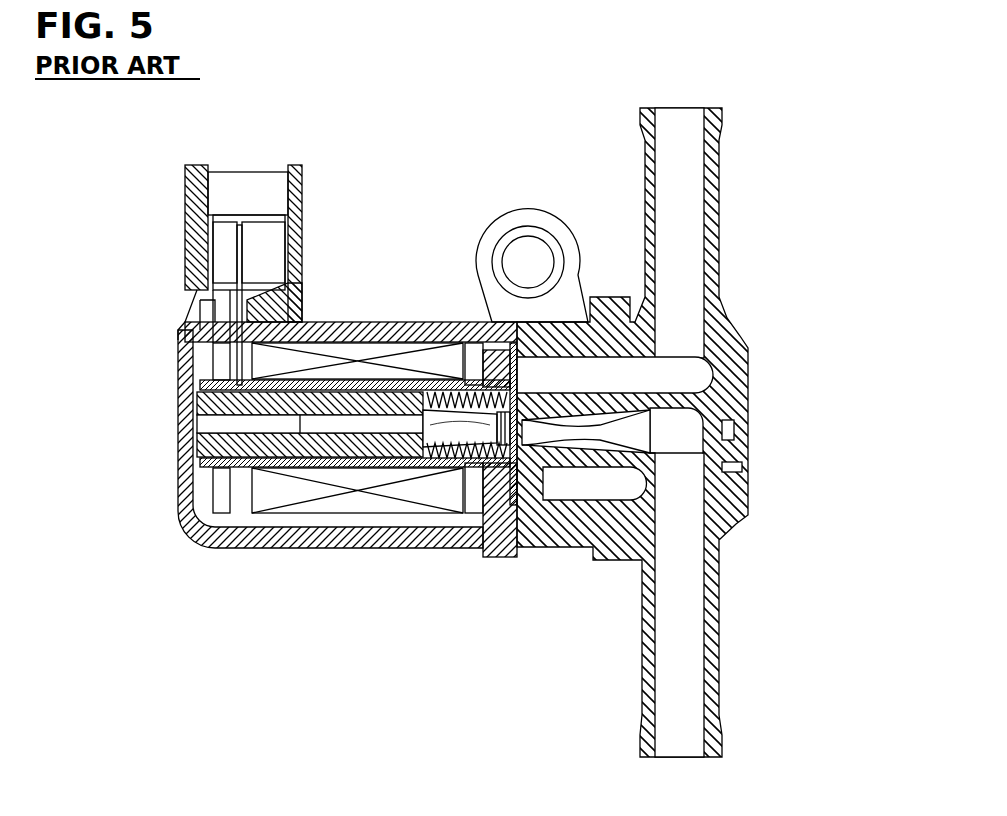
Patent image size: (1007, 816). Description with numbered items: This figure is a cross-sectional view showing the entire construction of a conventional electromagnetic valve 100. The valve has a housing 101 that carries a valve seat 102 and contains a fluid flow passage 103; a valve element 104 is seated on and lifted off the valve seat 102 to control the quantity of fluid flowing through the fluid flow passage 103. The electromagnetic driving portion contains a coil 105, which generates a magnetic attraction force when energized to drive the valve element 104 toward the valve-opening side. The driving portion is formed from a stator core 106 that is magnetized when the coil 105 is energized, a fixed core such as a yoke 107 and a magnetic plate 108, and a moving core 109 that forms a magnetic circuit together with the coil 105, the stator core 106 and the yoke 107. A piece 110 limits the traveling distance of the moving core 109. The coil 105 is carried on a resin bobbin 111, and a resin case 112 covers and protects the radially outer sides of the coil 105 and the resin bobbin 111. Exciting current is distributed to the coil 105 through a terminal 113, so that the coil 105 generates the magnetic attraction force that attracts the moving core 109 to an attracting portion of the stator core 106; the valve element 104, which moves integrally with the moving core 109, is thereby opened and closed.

The electromagnetic valve 100 is at (749, 210).
The housing 101 is at (737, 345).
The valve seat 102 is at (505, 365).
The fluid flow passage 103 is at (680, 372).
The valve element 104 is at (527, 430).
The coil 105 is at (343, 505).
The stator core 106 is at (303, 447).
The yoke 107 is at (238, 535).
The magnetic plate 108 is at (497, 535).
The moving core 109 is at (445, 392).
The piece 110 is at (437, 420).
The resin bobbin 111 is at (455, 525).
The resin case 112 is at (322, 332).
The terminal 113 is at (239, 227).